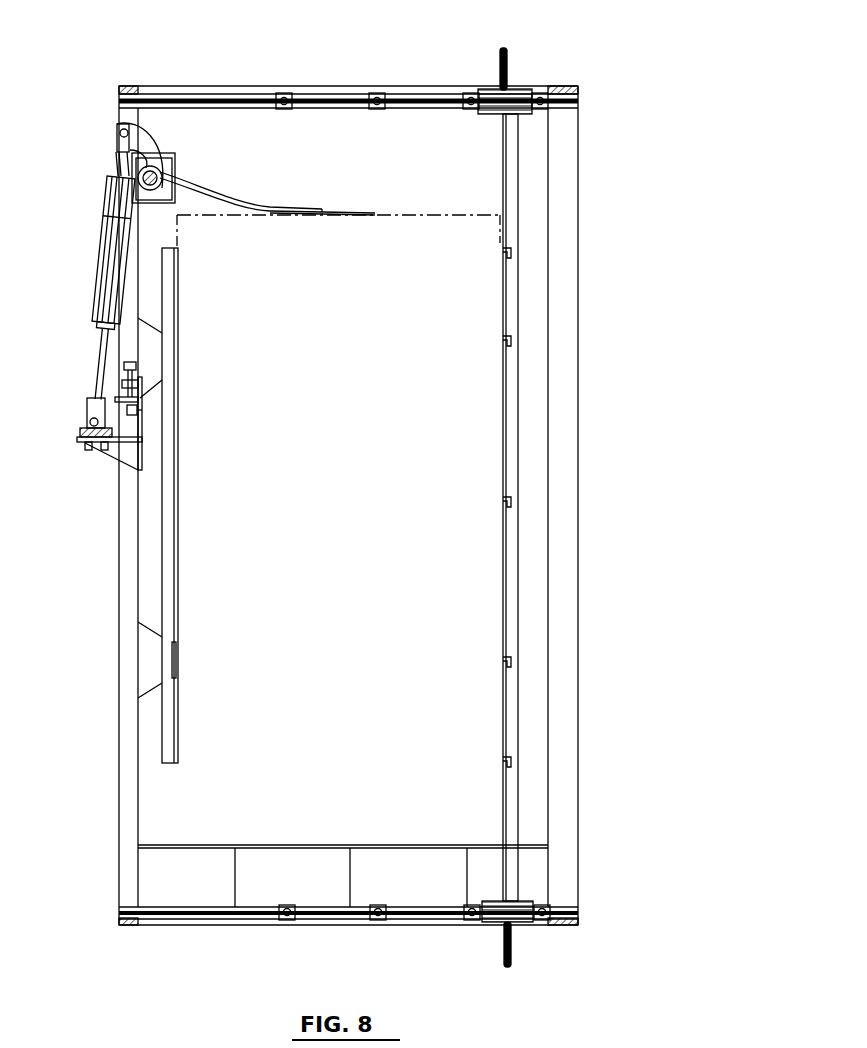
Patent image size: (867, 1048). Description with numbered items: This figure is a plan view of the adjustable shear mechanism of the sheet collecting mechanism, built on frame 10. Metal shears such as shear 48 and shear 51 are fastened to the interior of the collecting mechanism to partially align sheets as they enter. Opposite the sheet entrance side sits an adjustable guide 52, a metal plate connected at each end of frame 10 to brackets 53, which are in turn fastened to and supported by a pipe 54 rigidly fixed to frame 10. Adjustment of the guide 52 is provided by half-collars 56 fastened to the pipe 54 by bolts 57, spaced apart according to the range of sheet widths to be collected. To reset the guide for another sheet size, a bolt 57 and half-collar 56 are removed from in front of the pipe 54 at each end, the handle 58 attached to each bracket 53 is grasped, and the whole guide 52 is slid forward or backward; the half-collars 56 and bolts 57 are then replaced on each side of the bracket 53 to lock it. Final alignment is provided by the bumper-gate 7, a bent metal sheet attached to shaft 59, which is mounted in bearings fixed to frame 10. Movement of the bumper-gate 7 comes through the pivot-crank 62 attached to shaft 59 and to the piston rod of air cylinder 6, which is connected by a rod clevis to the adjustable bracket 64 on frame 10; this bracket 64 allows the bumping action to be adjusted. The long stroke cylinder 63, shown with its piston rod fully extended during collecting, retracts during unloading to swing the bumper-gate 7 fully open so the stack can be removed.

The air cylinder 6 is at (89, 276).
The bumper-gate 7 is at (338, 218).
The frame 10 is at (119, 92).
The metal shear 48 is at (292, 845).
The metal shear 51 is at (178, 476).
The adjustable guide 52 is at (503, 458).
The bracket 53 is at (499, 115).
The pipe 54 is at (438, 98).
The half-collar 56 is at (287, 95).
The bolt 57 is at (288, 108).
The handle 58 is at (509, 52).
The shaft 59 is at (162, 176).
The pivot-crank 62 is at (150, 142).
The long stroke cylinder 63 is at (98, 265).
The adjustable bracket 64 is at (77, 440).